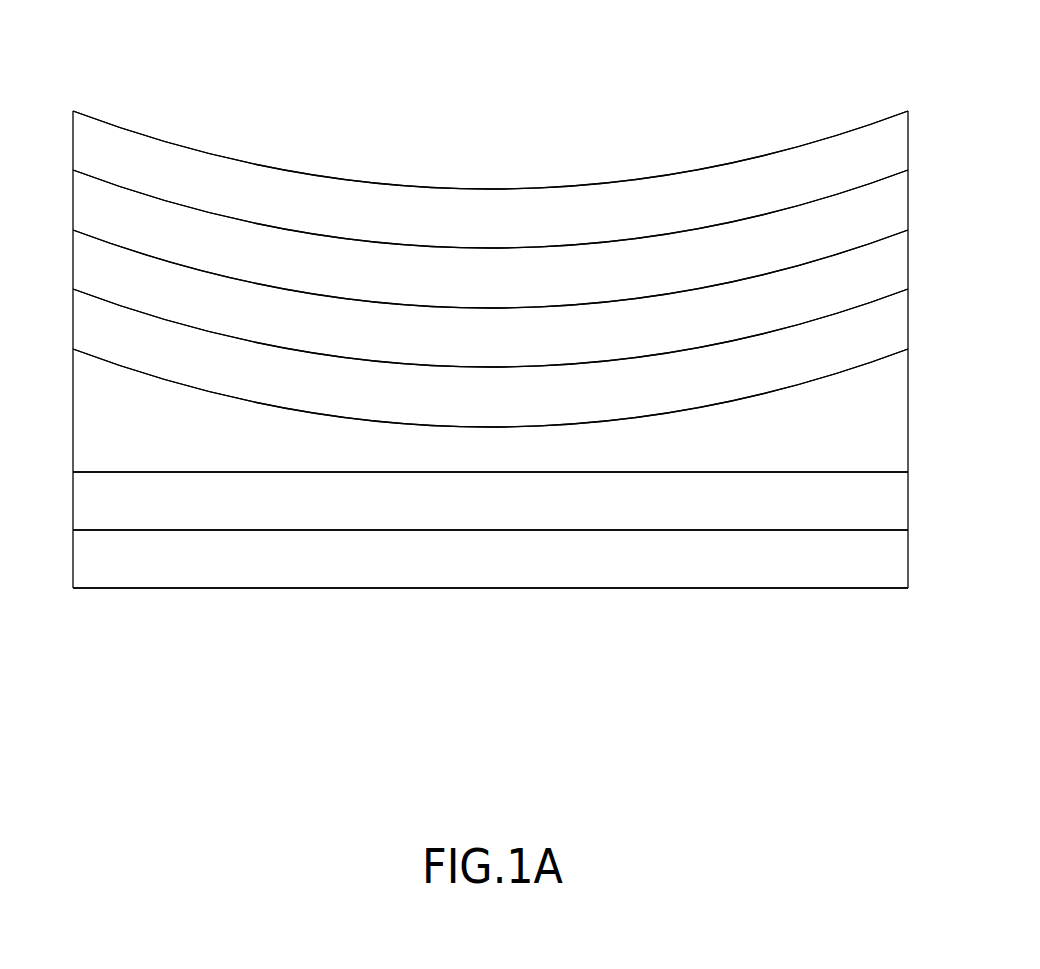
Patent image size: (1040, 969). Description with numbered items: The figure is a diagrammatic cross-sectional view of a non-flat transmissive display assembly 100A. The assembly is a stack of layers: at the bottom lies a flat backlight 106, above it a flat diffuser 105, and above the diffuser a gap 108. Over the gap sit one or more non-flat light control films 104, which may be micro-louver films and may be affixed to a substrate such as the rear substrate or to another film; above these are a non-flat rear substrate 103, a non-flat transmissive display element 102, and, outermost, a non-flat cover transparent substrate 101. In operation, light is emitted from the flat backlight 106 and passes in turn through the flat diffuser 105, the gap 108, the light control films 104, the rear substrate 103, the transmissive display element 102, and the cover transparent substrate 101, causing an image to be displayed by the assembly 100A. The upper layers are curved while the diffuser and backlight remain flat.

The non-flat transmissive display assembly 100A is at (189, 92).
The non-flat cover transparent substrate 101 is at (908, 140).
The non-flat transmissive display element 102 is at (908, 202).
The non-flat rear substrate 103 is at (908, 262).
The non-flat light control films 104 is at (908, 322).
The gap 108 is at (908, 412).
The flat diffuser 105 is at (908, 507).
The flat backlight 106 is at (908, 567).